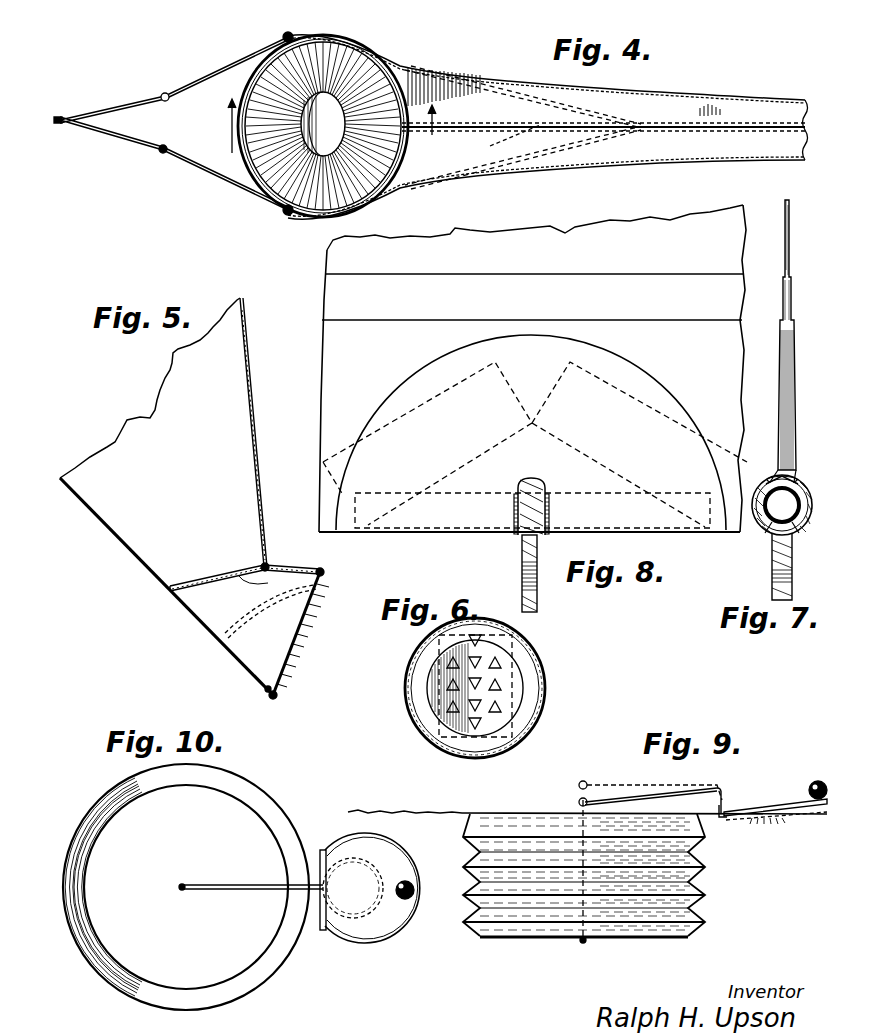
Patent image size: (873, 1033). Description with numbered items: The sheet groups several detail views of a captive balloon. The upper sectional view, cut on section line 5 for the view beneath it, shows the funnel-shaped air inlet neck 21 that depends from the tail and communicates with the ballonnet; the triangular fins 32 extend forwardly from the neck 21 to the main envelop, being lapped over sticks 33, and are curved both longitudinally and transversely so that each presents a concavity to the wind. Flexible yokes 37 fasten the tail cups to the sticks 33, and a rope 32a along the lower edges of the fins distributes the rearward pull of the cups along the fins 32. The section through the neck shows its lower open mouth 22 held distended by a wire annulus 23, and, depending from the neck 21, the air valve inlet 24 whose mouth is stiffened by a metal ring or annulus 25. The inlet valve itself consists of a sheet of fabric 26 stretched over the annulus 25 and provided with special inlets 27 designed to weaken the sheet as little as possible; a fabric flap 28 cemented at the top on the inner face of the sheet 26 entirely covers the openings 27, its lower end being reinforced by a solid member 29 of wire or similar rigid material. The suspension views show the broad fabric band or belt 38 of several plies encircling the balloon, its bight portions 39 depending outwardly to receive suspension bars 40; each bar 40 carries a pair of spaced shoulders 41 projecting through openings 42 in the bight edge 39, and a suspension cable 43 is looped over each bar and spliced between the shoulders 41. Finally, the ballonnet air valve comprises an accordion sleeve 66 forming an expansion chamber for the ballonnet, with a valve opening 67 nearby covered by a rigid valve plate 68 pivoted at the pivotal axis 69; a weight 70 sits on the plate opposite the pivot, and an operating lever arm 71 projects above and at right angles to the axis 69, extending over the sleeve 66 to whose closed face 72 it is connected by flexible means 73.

In FIG. 4, the section line 5 is at (232, 135).
In FIG. 4, the funnel-shaped air inlet neck 21 is at (323, 126).
In FIG. 5, the funnel-shaped air inlet neck 21 is at (163, 432).
In FIG. 4, the lower open mouth 22 is at (243, 127).
In FIG. 5, the lower open mouth 22 is at (272, 572).
In FIG. 5, the wire annulus 23 is at (268, 562).
In FIG. 5, the air valve inlet 24 is at (213, 612).
In FIG. 6, the air valve inlet 24 is at (546, 690).
In FIG. 5, the metal ring or annulus 25 is at (325, 573).
In FIG. 6, the metal ring or annulus 25 is at (410, 718).
In FIG. 5, the sheet of fabric 26 is at (317, 602).
In FIG. 6, the sheet of fabric 26 is at (505, 665).
In FIG. 5, the inlets 27 is at (301, 639).
In FIG. 6, the inlets 27 is at (455, 684).
In FIG. 5, the fabric flap 28 is at (258, 620).
In FIG. 5, the solid member 29 is at (266, 692).
In FIG. 4, the fins 32 is at (548, 127).
In FIG. 4, the rope 32a is at (492, 142).
In FIG. 4, the sticks 33 is at (283, 36).
In FIG. 4, the flexible yokes 37 is at (150, 110).
In FIG. 8, the fabric band or belt 38 is at (532, 368).
In FIG. 7, the fabric band or belt 38 is at (790, 288).
In FIG. 8, the bight portions 39 is at (485, 533).
In FIG. 7, the bight portions 39 is at (762, 530).
In FIG. 8, the suspension bars 40 is at (485, 504).
In FIG. 7, the suspension bars 40 is at (790, 500).
In FIG. 8, the spaced shoulders 41 is at (548, 515).
In FIG. 7, the spaced shoulders 41 is at (776, 490).
In FIG. 8, the openings 42 is at (545, 492).
In FIG. 8, the suspension cable 43 is at (538, 599).
In FIG. 7, the suspension cable 43 is at (774, 584).
In FIG. 10, the accordion sleeve 66 is at (262, 800).
In FIG. 9, the accordion sleeve 66 is at (706, 882).
In FIG. 10, the valve opening 67 is at (366, 916).
In FIG. 9, the valve opening 67 is at (787, 822).
In FIG. 10, the rigid valve plate 68 is at (372, 849).
In FIG. 9, the rigid valve plate 68 is at (795, 806).
In FIG. 10, the pivotal axis 69 is at (325, 926).
In FIG. 9, the pivotal axis 69 is at (718, 810).
In FIG. 10, the weight 70 is at (408, 900).
In FIG. 9, the weight 70 is at (818, 781).
In FIG. 10, the operating lever arm 71 is at (249, 888).
In FIG. 9, the operating lever arm 71 is at (654, 796).
In FIG. 10, the closed face 72 is at (186, 887).
In FIG. 9, the closed face 72 is at (546, 940).
In FIG. 9, the flexible means 73 is at (575, 832).